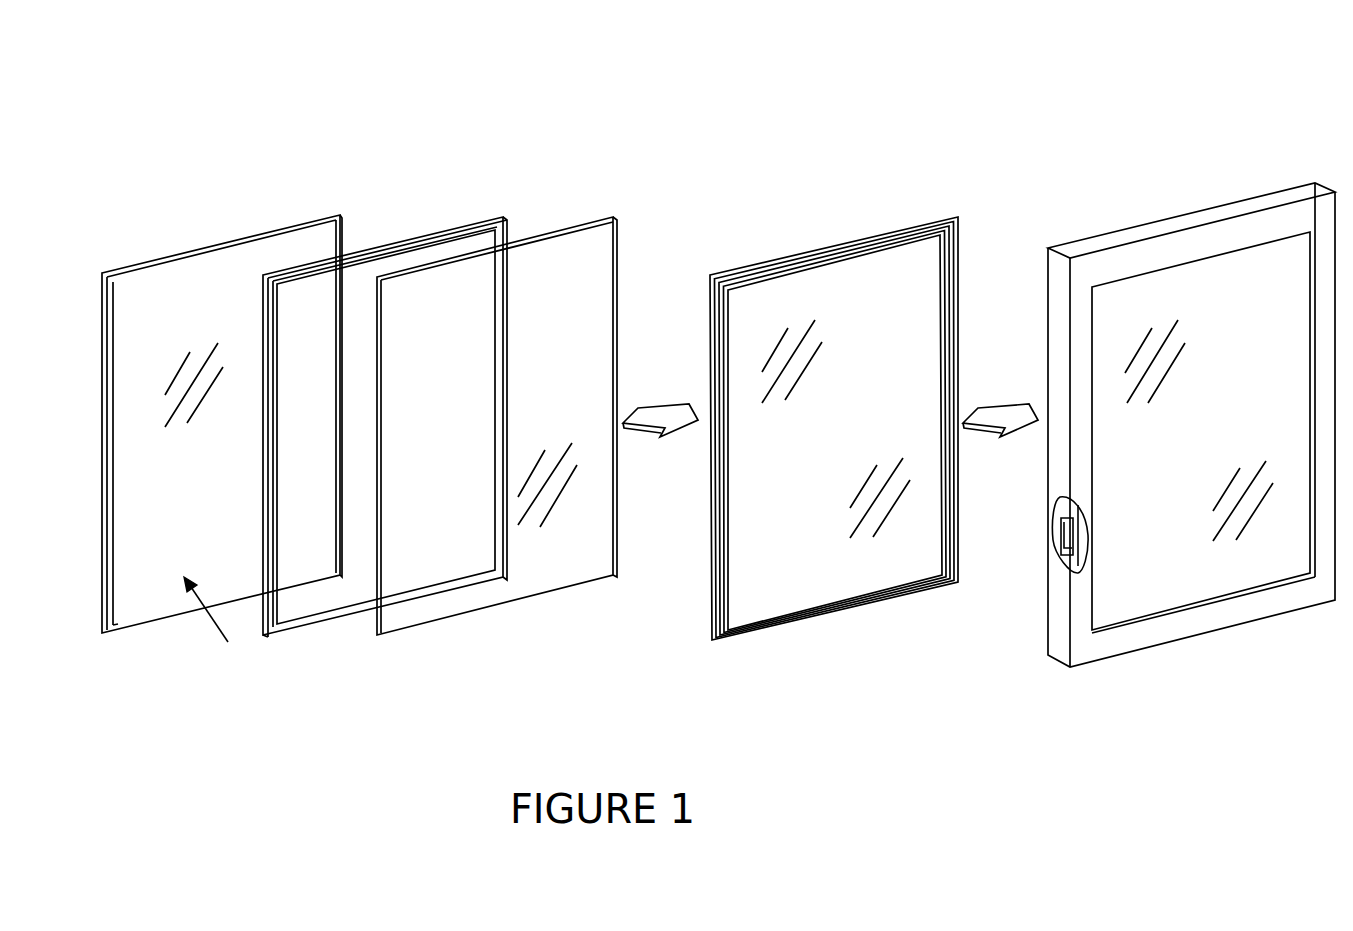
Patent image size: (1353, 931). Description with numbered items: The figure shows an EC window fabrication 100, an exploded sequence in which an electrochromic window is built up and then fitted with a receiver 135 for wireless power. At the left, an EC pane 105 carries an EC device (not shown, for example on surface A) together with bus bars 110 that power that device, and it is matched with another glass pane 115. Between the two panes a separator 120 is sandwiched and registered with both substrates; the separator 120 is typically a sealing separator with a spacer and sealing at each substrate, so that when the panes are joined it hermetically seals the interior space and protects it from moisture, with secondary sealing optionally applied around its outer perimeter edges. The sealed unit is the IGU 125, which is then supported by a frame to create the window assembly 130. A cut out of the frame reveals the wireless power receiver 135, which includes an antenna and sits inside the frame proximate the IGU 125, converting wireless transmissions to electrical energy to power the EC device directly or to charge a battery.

The EC window fabrication 100 is at (150, 118).
The EC pane 105 is at (241, 241).
The bus bars 110 is at (342, 226).
The glass pane 115 is at (562, 233).
The separator 120 is at (456, 231).
The IGU 125 is at (786, 230).
The window assembly 130 is at (1105, 205).
The receiver 135 is at (1044, 560).